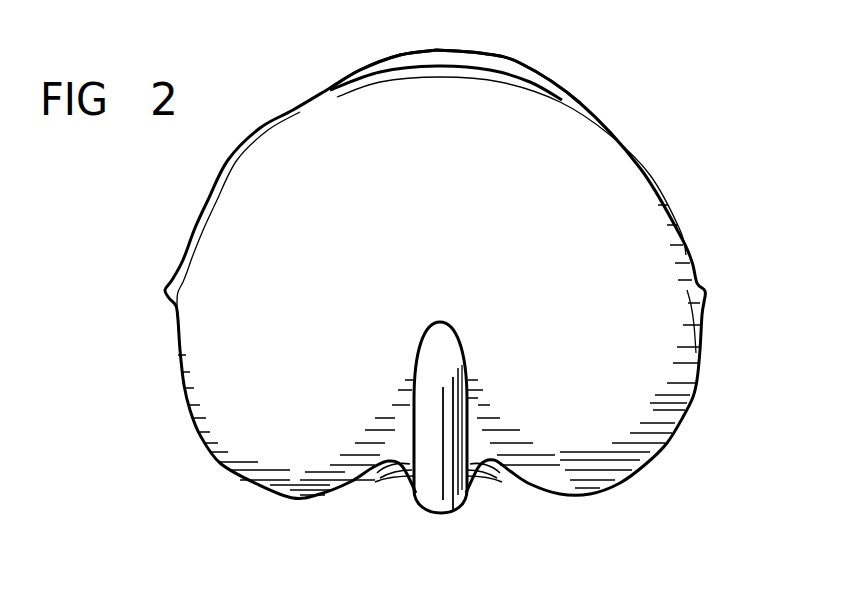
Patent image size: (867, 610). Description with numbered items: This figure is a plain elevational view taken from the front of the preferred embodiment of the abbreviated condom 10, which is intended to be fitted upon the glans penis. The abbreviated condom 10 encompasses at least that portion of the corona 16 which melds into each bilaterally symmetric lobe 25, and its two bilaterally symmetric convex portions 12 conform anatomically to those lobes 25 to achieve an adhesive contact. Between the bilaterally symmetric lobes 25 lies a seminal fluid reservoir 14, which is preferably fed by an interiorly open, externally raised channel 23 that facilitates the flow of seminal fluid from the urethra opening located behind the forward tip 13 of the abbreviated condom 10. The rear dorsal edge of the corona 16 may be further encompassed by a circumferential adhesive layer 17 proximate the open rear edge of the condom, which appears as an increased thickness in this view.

The abbreviated condom 10 is at (600, 183).
The bilaterally symmetric convex portion 12 is at (220, 463).
The forward tip 13 is at (437, 311).
The seminal fluid reservoir 14 is at (402, 482).
The corona 16 is at (457, 60).
The circumferential adhesive layer 17 is at (573, 107).
The channel 23 is at (428, 408).
The bilaterally symmetric lobe 25 is at (233, 397).